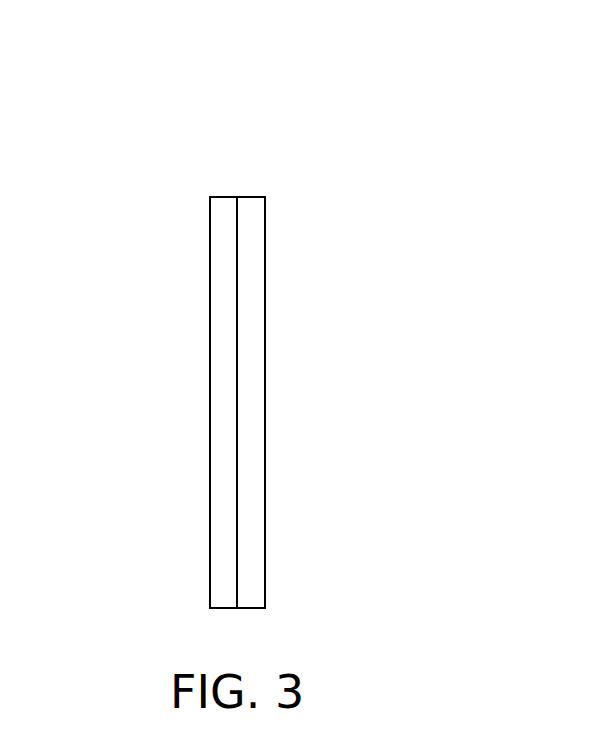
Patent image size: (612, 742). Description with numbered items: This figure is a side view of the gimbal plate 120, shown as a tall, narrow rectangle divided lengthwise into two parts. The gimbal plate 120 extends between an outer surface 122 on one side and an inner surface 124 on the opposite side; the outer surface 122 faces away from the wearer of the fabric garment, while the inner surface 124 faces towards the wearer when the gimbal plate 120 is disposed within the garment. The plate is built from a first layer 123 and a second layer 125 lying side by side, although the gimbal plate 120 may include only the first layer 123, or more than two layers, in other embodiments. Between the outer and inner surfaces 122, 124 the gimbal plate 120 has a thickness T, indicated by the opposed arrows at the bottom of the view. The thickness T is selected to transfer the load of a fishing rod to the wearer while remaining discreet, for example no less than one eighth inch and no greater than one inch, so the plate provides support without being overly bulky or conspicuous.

The gimbal plate 120 is at (265, 197).
The outer surface 122 is at (210, 265).
The inner surface 124 is at (265, 265).
The first layer 123 is at (226, 387).
The second layer 125 is at (250, 392).
The thickness T is at (132, 556).